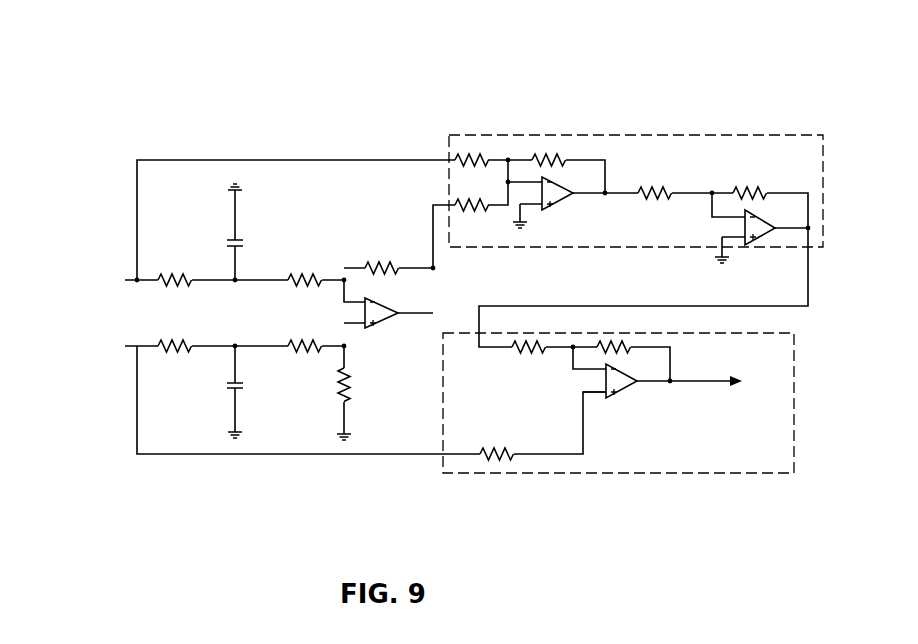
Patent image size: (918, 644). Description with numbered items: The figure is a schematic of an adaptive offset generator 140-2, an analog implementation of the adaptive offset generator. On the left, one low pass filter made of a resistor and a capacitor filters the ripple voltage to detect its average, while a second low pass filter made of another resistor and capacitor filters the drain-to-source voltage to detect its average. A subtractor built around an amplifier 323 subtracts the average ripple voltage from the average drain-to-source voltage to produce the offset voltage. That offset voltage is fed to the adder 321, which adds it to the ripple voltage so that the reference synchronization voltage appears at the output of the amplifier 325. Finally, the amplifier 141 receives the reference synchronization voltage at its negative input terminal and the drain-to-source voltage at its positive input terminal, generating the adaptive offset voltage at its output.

The adaptive offset generator 140-2 is at (160, 92).
The adder 321 is at (530, 135).
The amplifier 323 is at (386, 328).
The amplifier 325 is at (764, 245).
The amplifier 141 is at (565, 473).